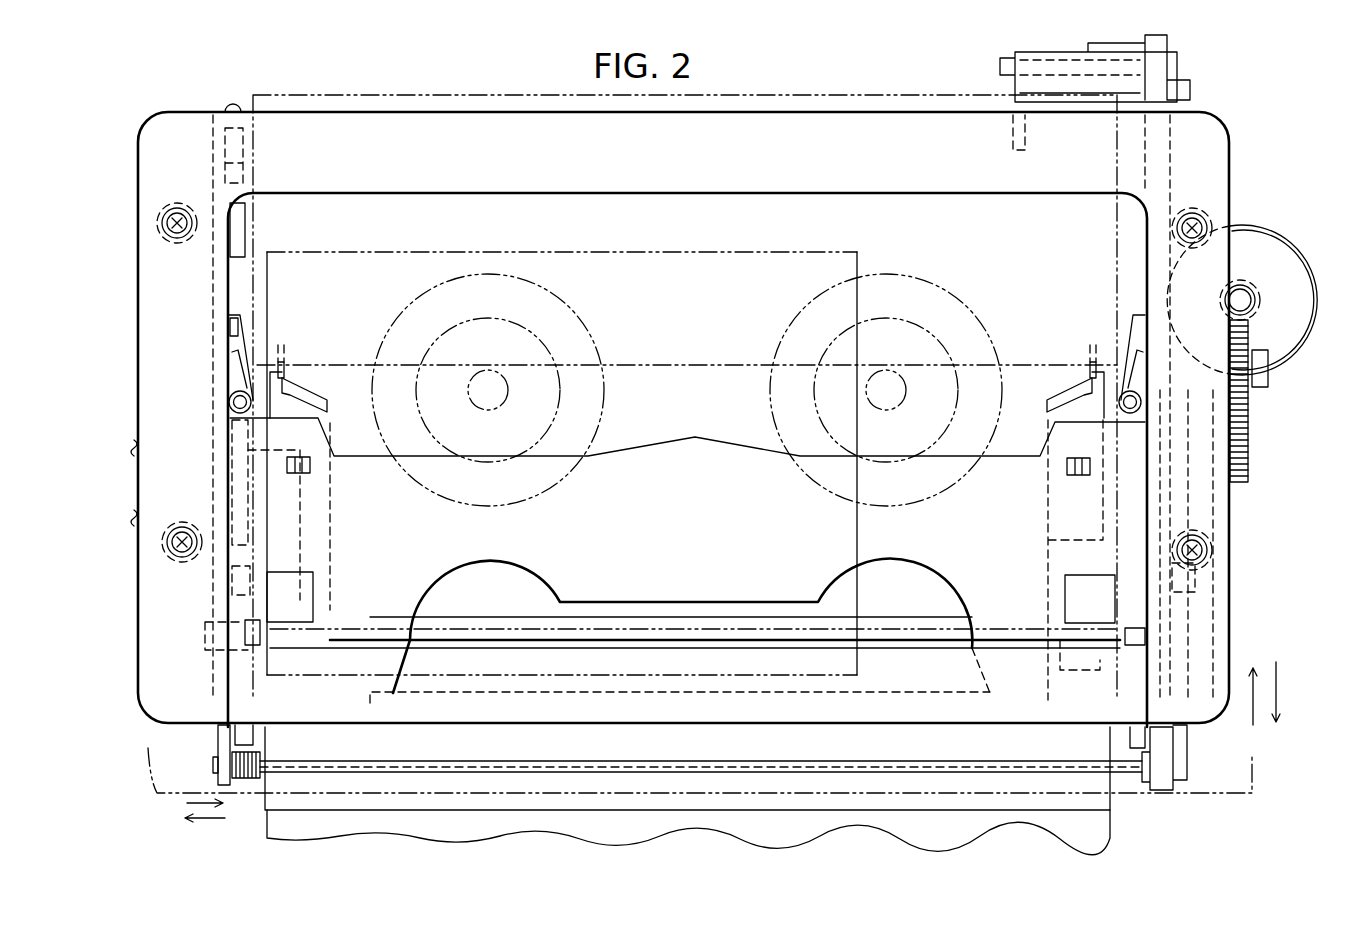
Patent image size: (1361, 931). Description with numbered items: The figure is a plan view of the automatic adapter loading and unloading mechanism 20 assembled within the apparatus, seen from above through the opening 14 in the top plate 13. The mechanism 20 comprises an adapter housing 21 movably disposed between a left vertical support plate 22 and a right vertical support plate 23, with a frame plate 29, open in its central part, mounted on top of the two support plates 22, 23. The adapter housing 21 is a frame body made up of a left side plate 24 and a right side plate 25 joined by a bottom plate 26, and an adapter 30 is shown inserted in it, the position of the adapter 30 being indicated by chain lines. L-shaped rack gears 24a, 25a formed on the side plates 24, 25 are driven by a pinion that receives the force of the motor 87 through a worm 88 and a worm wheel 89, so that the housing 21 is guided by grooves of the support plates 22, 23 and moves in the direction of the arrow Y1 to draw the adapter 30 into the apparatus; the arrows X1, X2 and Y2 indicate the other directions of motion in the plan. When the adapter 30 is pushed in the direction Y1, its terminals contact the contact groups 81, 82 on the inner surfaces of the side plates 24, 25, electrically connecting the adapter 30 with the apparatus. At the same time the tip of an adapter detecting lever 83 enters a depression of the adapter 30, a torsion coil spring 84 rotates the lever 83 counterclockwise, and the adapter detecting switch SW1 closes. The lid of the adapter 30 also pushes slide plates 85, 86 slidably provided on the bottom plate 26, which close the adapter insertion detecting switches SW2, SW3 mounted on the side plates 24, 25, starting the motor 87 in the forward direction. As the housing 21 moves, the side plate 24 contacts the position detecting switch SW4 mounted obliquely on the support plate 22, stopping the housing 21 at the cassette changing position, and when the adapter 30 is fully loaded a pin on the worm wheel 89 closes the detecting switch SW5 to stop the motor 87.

The top plate 13 is at (1190, 795).
The opening 14 is at (750, 254).
The adapter loading and unloading mechanism 20 is at (929, 77).
The adapter housing 21 is at (695, 437).
The left vertical support plate 22 is at (213, 290).
The right vertical support plate 23 is at (1165, 178).
The left side plate 24 is at (240, 500).
The L-shaped rack gear 24a is at (265, 744).
The right side plate 25 is at (1112, 516).
The L-shaped rack gear 25a is at (1130, 748).
The bottom plate 26 is at (532, 560).
The frame plate 29 is at (493, 115).
The adapter 30 is at (750, 95).
The contact group 81 is at (248, 630).
The contact group 82 is at (1145, 638).
The adapter detecting lever 83 is at (240, 432).
The torsion coil spring 84 is at (234, 392).
The slide plate 85 is at (318, 392).
The slide plate 86 is at (1085, 375).
The motor 87 is at (1238, 228).
The worm 88 is at (1240, 286).
The worm wheel 89 is at (1250, 452).
The adapter detecting switch SW1 is at (228, 326).
The adapter insertion detecting switch SW2 is at (235, 586).
The adapter insertion detecting switch SW3 is at (1200, 585).
The position detecting switch SW4 is at (247, 174).
The detecting switch SW5 is at (1264, 388).
The direction X1 is at (192, 803).
The direction X2 is at (219, 819).
The arrow Y1 is at (1260, 710).
The direction Y2 is at (1280, 680).